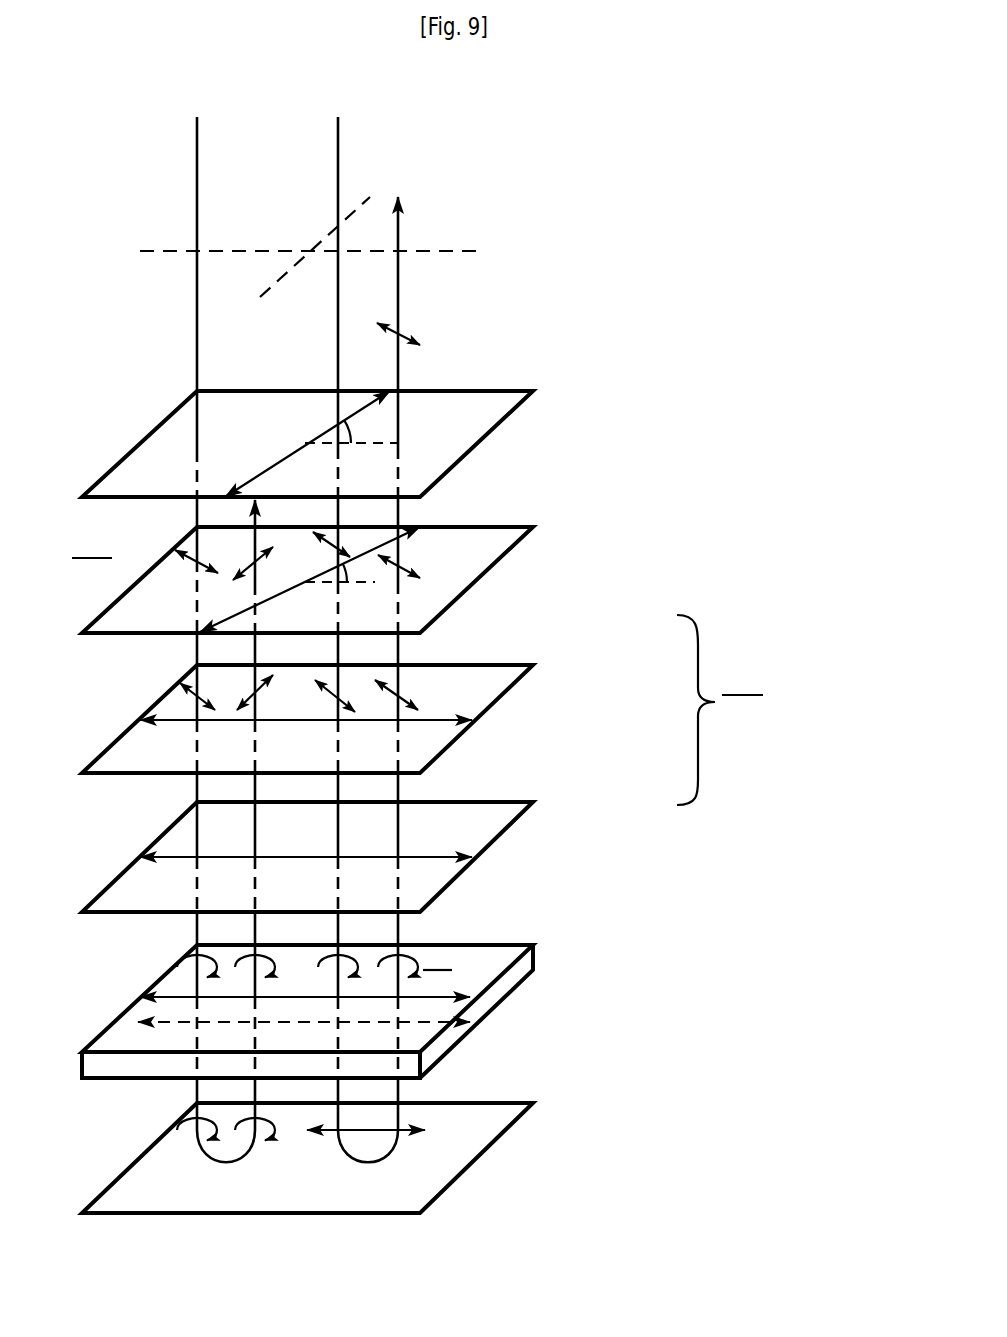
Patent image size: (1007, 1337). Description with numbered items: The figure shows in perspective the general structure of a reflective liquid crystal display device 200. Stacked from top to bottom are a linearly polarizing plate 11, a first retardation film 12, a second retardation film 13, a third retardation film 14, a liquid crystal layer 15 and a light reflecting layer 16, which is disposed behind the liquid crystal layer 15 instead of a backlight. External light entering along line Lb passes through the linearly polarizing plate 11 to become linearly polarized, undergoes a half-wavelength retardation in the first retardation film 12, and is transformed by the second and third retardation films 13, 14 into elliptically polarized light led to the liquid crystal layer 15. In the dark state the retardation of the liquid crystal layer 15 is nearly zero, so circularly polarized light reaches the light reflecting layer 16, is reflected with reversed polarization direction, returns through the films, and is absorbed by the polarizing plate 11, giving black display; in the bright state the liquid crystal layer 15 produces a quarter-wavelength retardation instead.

The liquid crystal display device 200 is at (459, 640).
The linearly polarizing plate 11 is at (498, 391).
The first retardation film 12 is at (498, 527).
The second retardation film 13 is at (498, 665).
The third retardation film 14 is at (498, 802).
The liquid crystal layer 15 is at (498, 945).
The light reflecting layer 16 is at (498, 1103).